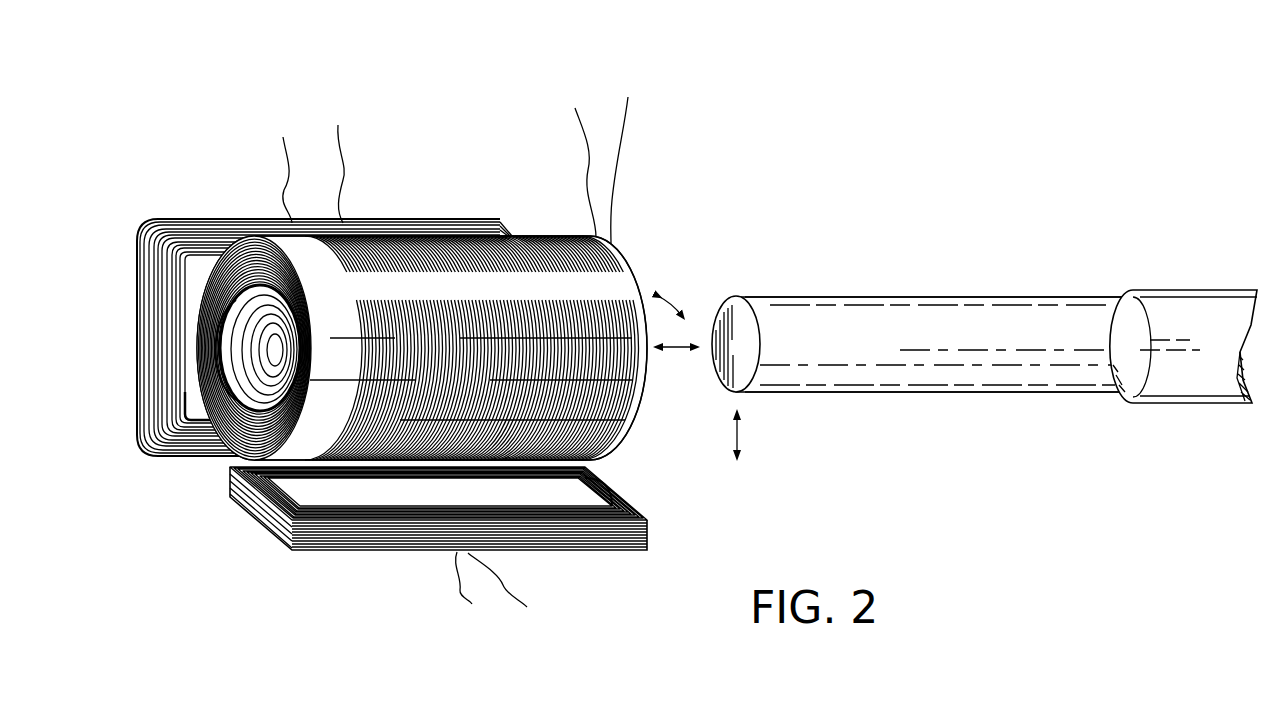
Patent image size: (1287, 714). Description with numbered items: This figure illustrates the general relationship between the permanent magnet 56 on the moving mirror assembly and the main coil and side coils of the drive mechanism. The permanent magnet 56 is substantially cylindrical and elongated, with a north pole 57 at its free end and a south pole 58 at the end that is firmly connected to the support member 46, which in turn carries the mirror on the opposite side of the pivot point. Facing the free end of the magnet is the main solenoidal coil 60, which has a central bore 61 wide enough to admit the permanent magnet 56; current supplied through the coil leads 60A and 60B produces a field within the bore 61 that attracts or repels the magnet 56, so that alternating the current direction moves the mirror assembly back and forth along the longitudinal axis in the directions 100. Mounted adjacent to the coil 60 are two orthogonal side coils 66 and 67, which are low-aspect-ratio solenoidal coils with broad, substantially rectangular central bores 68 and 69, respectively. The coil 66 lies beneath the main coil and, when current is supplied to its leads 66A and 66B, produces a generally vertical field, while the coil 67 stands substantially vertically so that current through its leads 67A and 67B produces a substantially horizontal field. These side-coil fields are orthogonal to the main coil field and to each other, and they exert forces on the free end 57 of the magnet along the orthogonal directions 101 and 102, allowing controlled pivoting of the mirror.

The support member 46 is at (1212, 290).
The permanent magnet 56 is at (920, 297).
The north pole 57 is at (758, 297).
The south pole 58 is at (1073, 392).
The main solenoidal coil 60 is at (452, 226).
The coil lead 60A is at (570, 125).
The coil lead 60B is at (627, 112).
The central bore 61 is at (240, 312).
The side coil 66 is at (318, 553).
The coil lead 66A is at (462, 585).
The coil lead 66B is at (517, 594).
The side coil 67 is at (167, 362).
The coil lead 67A is at (280, 147).
The coil lead 67B is at (340, 137).
The rectangular central bore 68 is at (593, 500).
The rectangular central bore 69 is at (190, 392).
The directions 100 is at (678, 353).
The orthogonal direction 101 is at (740, 432).
The orthogonal direction 102 is at (672, 300).